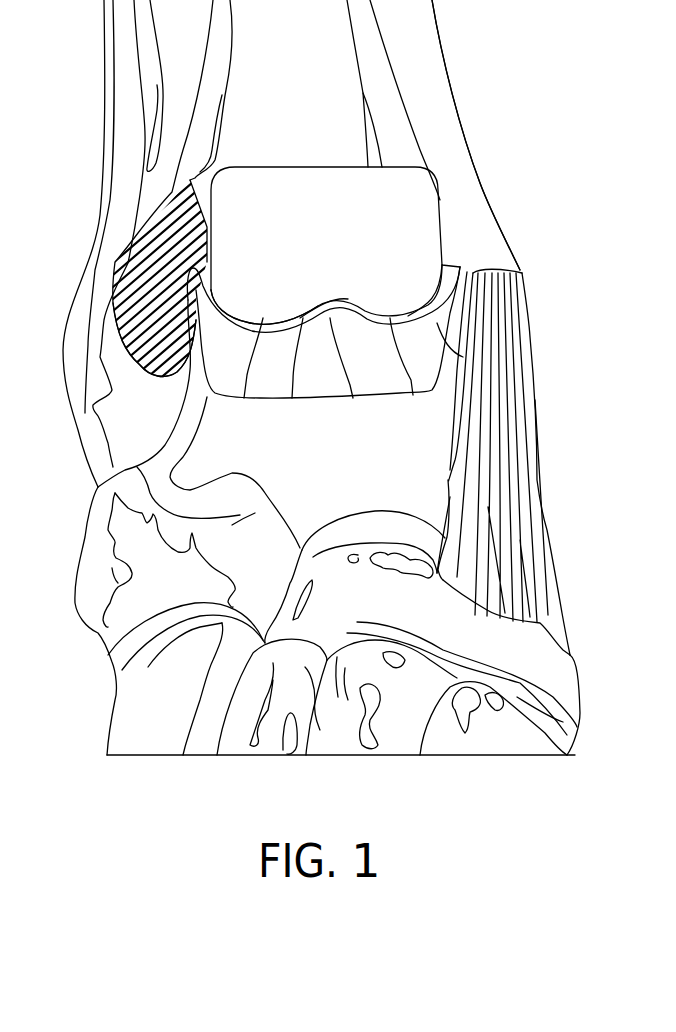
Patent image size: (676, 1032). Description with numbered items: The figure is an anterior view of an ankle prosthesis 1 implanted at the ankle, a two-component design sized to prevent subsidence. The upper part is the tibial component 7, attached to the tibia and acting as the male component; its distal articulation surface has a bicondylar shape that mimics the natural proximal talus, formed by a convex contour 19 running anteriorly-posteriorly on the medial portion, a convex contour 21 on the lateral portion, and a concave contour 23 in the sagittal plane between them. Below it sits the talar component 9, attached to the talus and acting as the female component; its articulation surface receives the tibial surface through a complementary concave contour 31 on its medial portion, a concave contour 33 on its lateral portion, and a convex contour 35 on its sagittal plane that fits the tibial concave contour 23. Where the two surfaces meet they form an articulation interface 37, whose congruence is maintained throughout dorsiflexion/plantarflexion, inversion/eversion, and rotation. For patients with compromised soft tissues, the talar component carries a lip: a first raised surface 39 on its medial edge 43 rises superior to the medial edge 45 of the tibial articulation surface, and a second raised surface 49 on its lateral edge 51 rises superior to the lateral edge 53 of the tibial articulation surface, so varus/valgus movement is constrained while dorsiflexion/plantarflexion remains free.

The ankle prosthesis 1 is at (440, 203).
The tibial component 7 is at (335, 228).
The talar component 9 is at (328, 332).
The convex contour 19 is at (393, 317).
The convex contour 21 is at (262, 320).
The concave contour 23 is at (325, 303).
The concave contour 31 is at (413, 395).
The concave contour 33 is at (244, 398).
The convex contour 35 is at (353, 398).
The articulation interface 37 is at (292, 398).
The first raised surface 39 is at (463, 287).
The medial edge 43 is at (463, 357).
The medial edge 45 is at (428, 303).
The second raised surface 49 is at (198, 298).
The lateral edge 51 is at (212, 325).
The lateral edge 53 is at (217, 297).